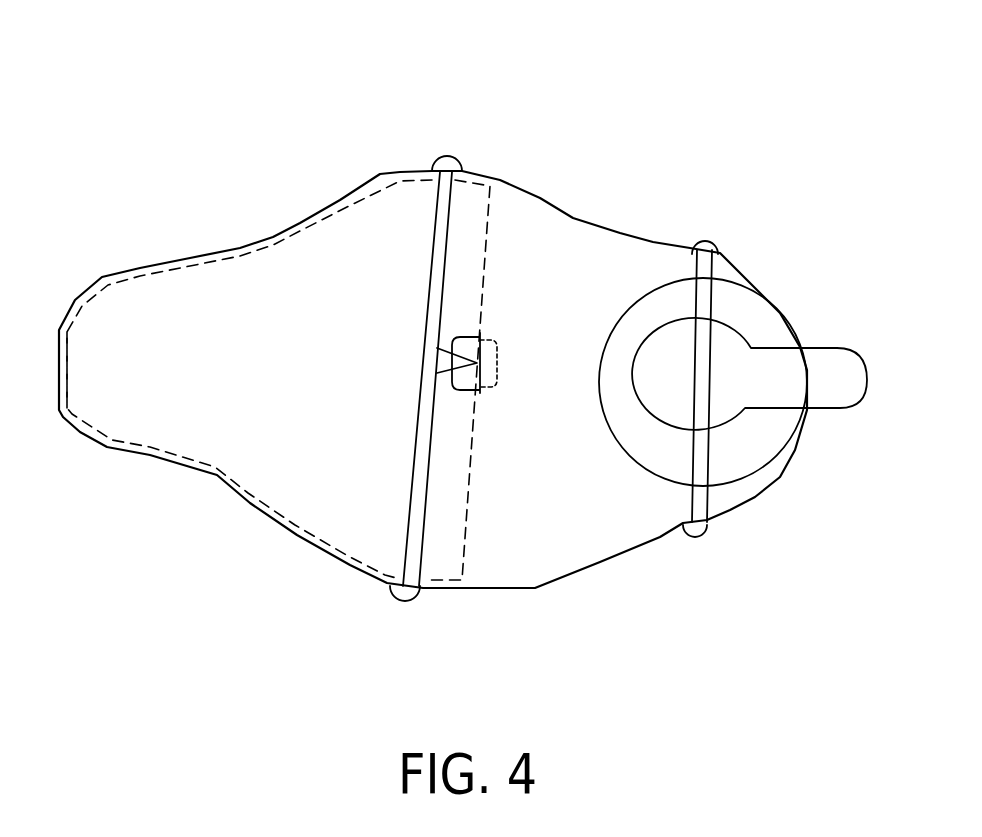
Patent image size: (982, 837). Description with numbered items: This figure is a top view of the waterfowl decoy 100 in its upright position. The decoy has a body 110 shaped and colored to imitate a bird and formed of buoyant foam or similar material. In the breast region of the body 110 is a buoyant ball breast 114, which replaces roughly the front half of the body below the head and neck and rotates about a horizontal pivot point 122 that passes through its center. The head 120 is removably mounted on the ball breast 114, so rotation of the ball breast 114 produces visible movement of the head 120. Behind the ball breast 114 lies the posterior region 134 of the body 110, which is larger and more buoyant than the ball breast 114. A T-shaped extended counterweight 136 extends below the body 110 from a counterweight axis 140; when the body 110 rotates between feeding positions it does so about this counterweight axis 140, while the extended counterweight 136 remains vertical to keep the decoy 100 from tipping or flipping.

The waterfowl decoy 100 is at (548, 100).
The body 110 is at (555, 248).
The ball breast 114 is at (733, 308).
The head 120 is at (766, 366).
The horizontal pivot point 122 is at (718, 245).
The posterior region 134 is at (303, 268).
The extended counterweight 136 is at (504, 363).
The counterweight axis 140 is at (467, 158).